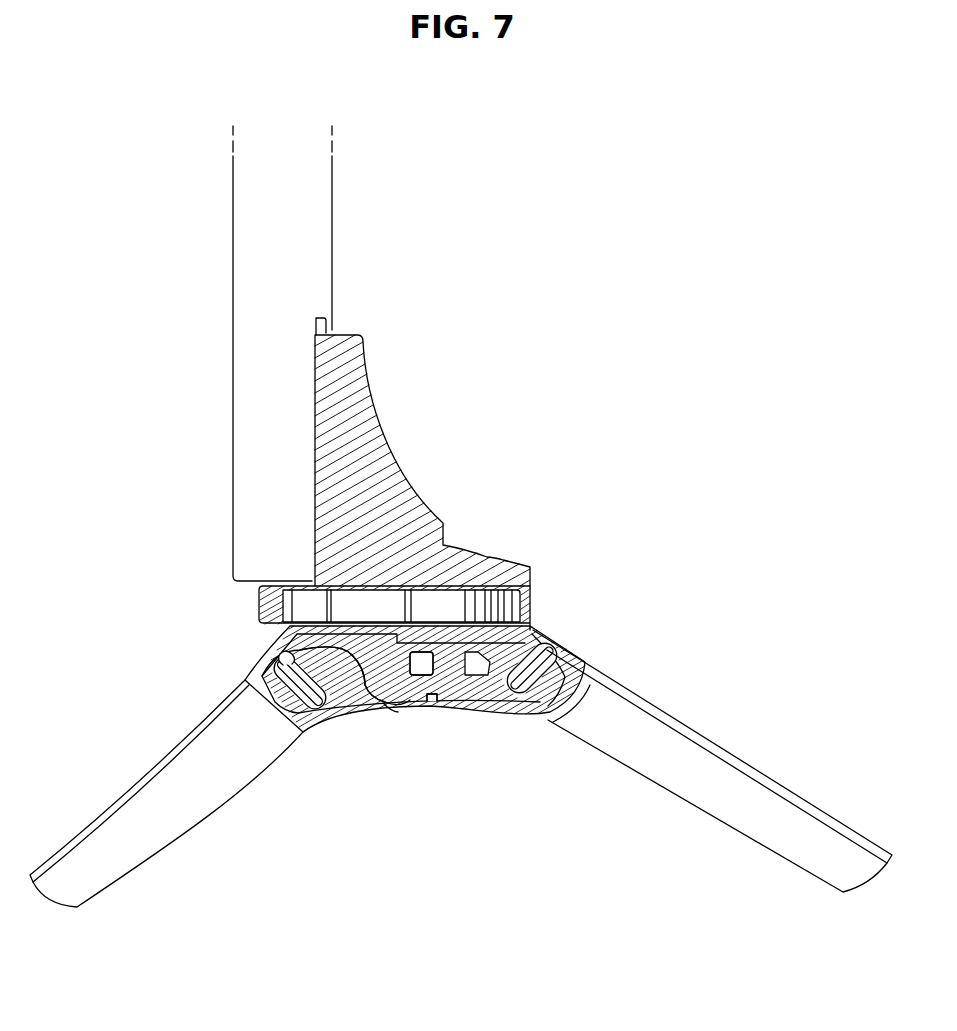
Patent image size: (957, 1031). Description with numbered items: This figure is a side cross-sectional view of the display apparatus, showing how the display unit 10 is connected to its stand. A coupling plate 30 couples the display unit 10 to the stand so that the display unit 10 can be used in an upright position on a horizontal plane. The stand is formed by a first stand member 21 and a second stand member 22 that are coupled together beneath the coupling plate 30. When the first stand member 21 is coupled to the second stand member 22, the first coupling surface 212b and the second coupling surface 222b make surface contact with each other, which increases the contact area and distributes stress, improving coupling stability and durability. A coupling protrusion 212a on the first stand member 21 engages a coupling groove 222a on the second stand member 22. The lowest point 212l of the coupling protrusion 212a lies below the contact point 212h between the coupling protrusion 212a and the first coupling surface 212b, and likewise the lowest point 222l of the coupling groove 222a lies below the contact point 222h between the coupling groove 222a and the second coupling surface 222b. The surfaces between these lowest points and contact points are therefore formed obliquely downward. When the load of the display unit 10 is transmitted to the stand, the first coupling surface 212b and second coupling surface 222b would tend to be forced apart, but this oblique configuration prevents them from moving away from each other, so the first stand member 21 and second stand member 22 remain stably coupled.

The display unit 10 is at (341, 218).
The coupling plate 30 is at (415, 467).
The first stand member 21 is at (755, 757).
The second stand member 22 is at (117, 779).
The coupling protrusion 212a is at (297, 657).
The coupling groove 222a is at (285, 678).
The lowest point of the coupling protrusion 212l is at (383, 705).
The lowest point of the coupling groove 222l is at (339, 729).
The contact point of the coupling protrusion and the first coupling surface 212h is at (418, 710).
The contact point of the coupling groove and the second coupling surface 222h is at (445, 728).
The first coupling surface 212b is at (385, 704).
The second coupling surface 222b is at (402, 786).